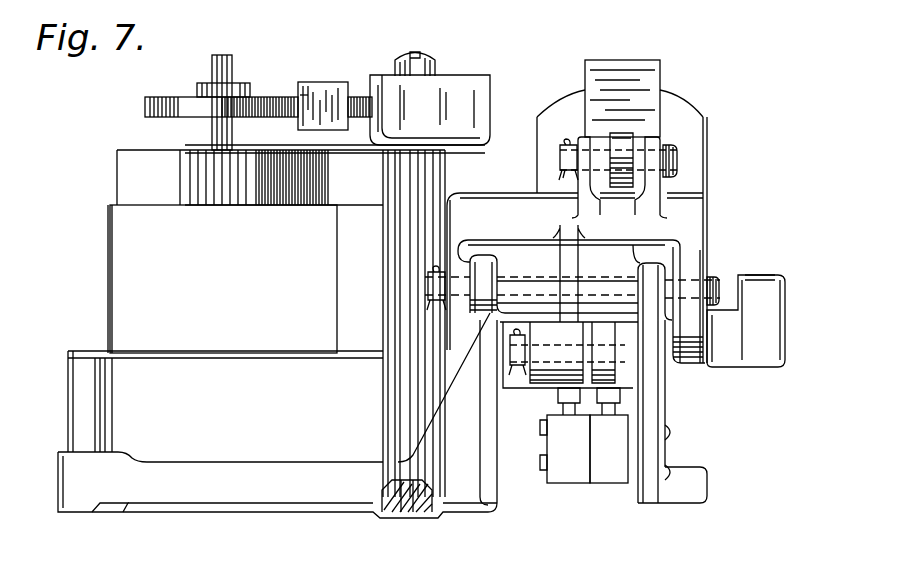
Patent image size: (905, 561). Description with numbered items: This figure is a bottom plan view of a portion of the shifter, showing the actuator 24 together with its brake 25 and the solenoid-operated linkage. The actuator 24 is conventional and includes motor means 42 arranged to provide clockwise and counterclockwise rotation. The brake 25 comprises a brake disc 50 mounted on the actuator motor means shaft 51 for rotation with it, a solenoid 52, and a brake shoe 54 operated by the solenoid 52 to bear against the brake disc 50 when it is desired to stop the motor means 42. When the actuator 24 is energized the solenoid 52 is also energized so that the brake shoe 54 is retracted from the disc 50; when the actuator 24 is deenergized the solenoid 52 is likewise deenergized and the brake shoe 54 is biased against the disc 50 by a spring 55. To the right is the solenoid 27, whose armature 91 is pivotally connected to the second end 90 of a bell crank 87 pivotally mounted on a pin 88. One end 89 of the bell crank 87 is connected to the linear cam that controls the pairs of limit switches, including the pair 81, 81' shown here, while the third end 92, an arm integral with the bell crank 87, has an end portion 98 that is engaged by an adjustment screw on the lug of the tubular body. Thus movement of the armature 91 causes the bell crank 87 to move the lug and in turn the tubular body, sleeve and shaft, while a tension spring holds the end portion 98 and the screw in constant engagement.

The actuator 24 is at (100, 268).
The brake 25 is at (268, 82).
The solenoid 27 is at (695, 100).
The motor means 42 is at (305, 262).
The brake disc 50 is at (147, 105).
The actuator motor means shaft 51 is at (222, 62).
The solenoid 52 is at (462, 90).
The brake shoe 54 is at (318, 84).
The spring 55 is at (358, 97).
The limit switch 81 is at (648, 449).
The limit switch 81' is at (565, 447).
The bell crank 87 is at (500, 207).
The pin 88 is at (717, 272).
The one end 89 is at (572, 352).
The second end 90 is at (680, 158).
The armature 91 is at (618, 133).
The third end 92 is at (760, 316).
The end portion 98 is at (762, 272).